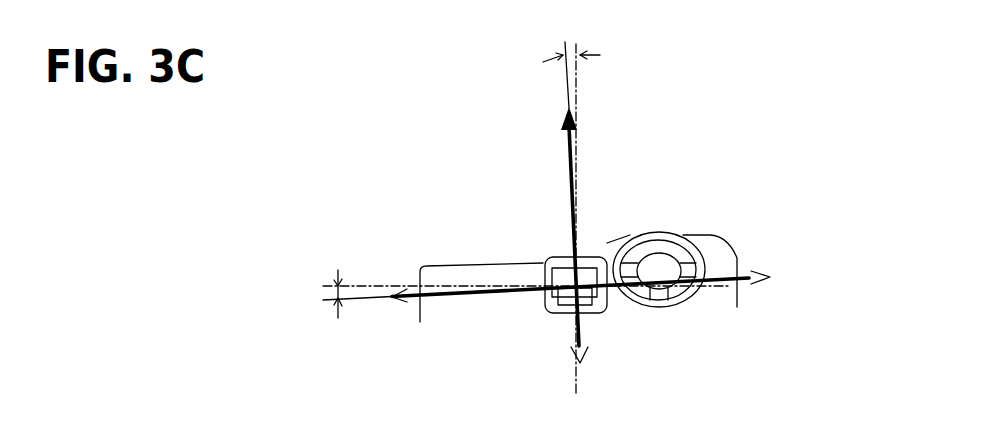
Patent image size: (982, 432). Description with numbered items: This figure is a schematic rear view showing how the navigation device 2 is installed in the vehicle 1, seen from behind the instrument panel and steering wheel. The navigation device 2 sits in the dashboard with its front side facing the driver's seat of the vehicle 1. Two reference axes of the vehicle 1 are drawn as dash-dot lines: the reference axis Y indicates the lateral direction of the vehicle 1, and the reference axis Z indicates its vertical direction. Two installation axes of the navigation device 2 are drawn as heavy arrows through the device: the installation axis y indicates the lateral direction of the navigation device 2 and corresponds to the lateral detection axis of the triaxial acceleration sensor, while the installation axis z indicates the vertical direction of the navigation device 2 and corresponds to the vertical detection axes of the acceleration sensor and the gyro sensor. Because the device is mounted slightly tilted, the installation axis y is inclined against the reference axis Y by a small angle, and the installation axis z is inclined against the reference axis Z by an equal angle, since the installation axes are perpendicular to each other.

The vehicle 1 is at (704, 218).
The navigation device 2 is at (558, 259).
The reference axis Z is at (577, 147).
The installation axis z is at (567, 141).
The reference axis Y is at (362, 286).
The installation axis y is at (450, 298).